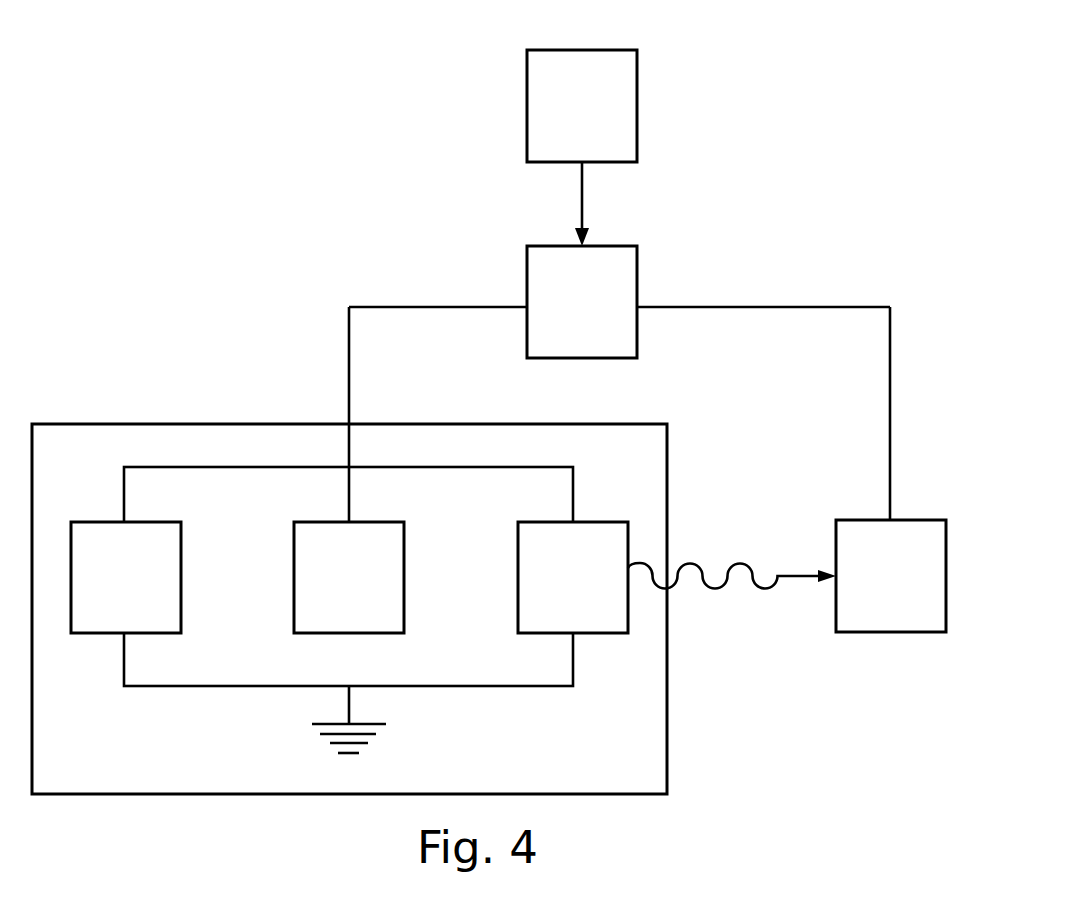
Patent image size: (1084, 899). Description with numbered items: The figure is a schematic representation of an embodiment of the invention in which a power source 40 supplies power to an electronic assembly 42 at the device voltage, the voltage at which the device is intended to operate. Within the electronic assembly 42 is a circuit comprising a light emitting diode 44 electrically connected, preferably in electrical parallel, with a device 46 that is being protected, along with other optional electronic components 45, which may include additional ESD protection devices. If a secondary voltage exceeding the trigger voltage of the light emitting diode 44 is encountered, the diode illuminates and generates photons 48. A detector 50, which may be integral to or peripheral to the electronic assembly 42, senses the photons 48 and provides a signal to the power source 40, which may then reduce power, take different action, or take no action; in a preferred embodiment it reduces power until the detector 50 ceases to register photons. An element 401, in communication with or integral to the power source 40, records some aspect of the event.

The element 401 is at (637, 120).
The power source 40 is at (527, 282).
The electronic assembly 42 is at (137, 424).
The light emitting diode 44 is at (518, 603).
The optional electronic components 45 is at (293, 605).
The device 46 is at (182, 548).
The photons 48 is at (717, 593).
The detector 50 is at (877, 632).